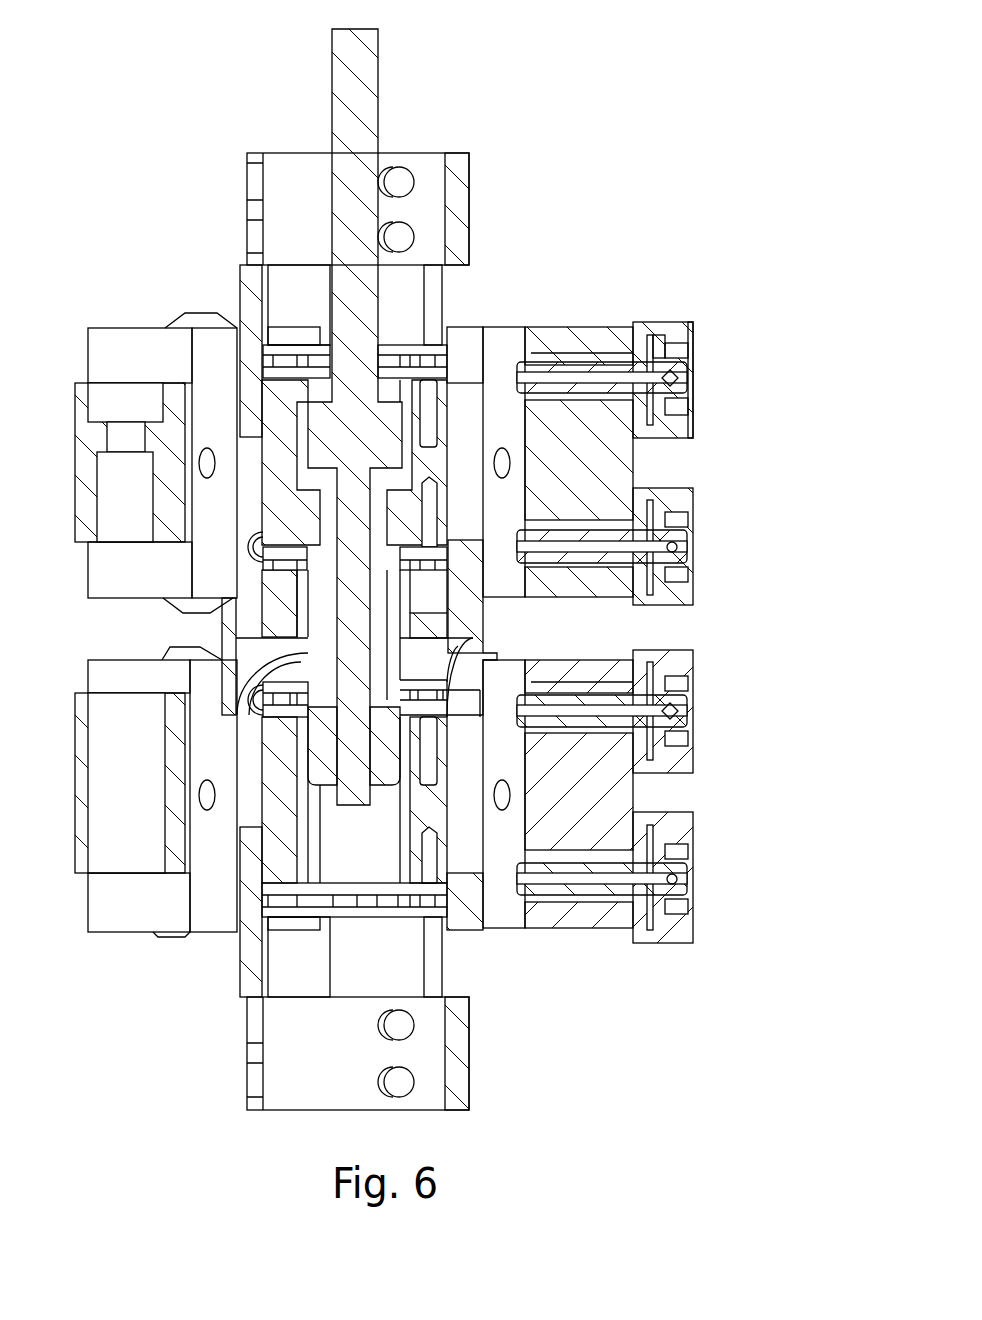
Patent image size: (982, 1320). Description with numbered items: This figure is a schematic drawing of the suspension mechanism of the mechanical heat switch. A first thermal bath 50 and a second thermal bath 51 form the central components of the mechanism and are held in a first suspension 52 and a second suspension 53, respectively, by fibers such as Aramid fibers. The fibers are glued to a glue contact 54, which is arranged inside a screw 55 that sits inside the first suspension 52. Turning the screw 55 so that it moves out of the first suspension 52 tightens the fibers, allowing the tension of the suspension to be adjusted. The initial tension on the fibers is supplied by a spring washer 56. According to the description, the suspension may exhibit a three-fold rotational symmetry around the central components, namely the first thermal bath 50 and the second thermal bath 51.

The first thermal bath 50 is at (375, 300).
The second thermal bath 51 is at (457, 911).
The first suspension 52 is at (642, 440).
The second suspension 53 is at (580, 659).
The glue contact 54 is at (699, 363).
The screw 55 is at (687, 321).
The spring washer 56 is at (664, 340).